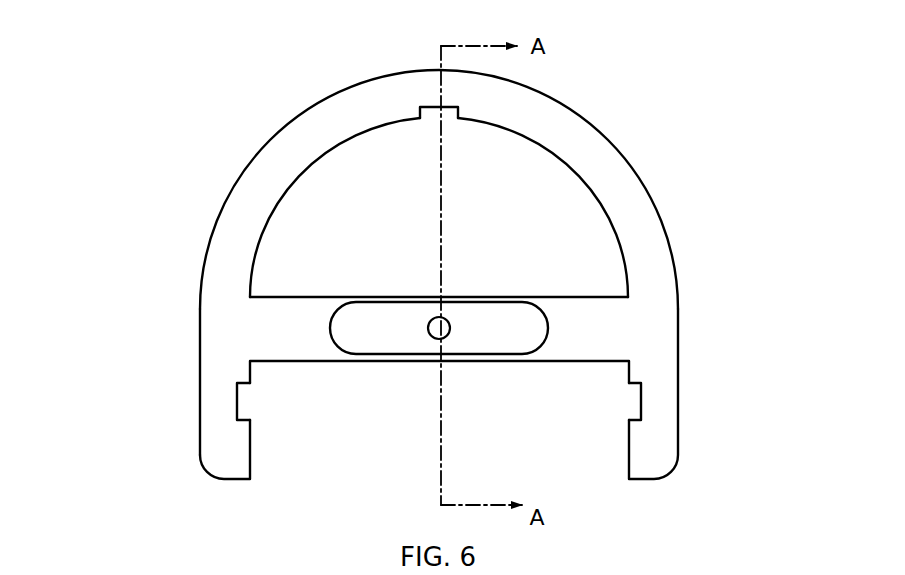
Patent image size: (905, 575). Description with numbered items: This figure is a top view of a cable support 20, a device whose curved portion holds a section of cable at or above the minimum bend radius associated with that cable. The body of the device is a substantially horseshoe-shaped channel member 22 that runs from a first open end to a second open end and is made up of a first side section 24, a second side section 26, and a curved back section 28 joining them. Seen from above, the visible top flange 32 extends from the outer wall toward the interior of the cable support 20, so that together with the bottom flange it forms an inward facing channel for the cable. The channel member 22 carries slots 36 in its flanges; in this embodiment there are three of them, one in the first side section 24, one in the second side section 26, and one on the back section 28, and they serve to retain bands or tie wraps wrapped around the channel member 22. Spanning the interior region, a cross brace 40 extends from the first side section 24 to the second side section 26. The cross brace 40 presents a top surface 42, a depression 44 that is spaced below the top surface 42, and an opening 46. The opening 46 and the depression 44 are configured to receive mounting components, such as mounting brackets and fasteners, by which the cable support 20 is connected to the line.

The cable support 20 is at (676, 125).
The channel member 22 is at (201, 248).
The first side section 24 is at (665, 361).
The second side section 26 is at (202, 372).
The curved back section 28 is at (296, 117).
The top flange 32 is at (647, 257).
The slots 36 is at (418, 115).
The cross brace 40 is at (280, 310).
The top surface 42 is at (585, 350).
The depression 44 is at (378, 340).
The opening 46 is at (445, 337).